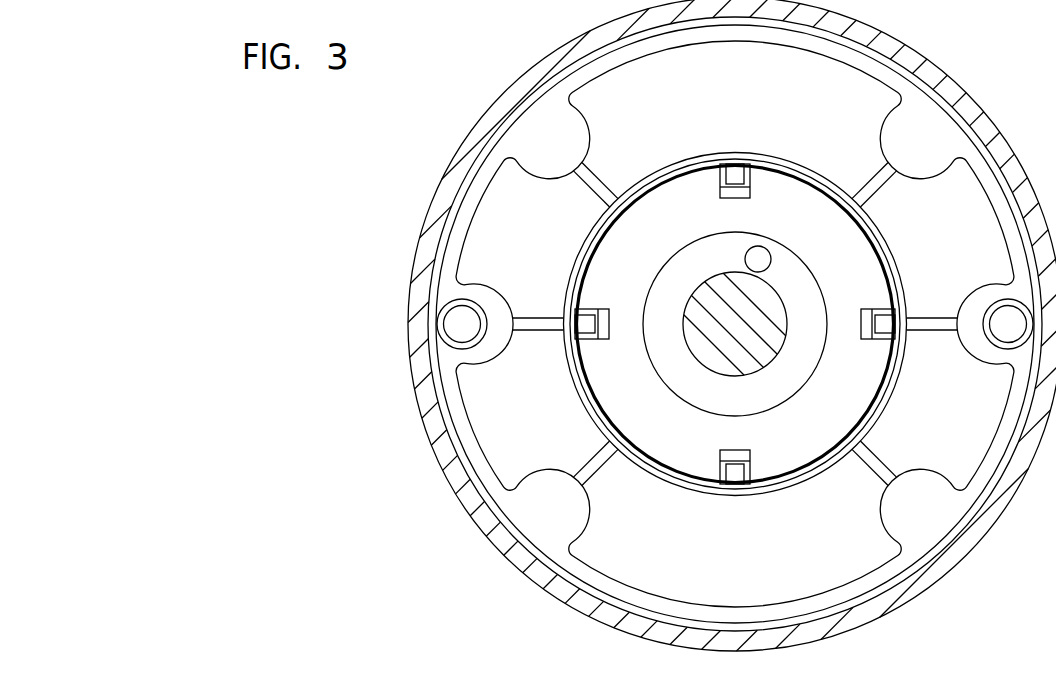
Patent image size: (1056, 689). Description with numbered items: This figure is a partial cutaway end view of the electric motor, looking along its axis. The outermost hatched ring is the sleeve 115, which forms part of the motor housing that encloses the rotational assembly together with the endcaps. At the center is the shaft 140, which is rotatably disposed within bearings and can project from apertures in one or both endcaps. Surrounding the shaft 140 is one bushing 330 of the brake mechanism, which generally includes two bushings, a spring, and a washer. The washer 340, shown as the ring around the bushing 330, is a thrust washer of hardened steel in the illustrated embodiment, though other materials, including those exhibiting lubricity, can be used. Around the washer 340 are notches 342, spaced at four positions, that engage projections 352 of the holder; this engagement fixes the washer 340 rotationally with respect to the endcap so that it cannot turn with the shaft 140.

The sleeve 115 is at (950, 91).
The shaft 140 is at (713, 356).
The bushing 330 is at (678, 377).
The washer 340 is at (867, 264).
The notches 342 is at (720, 188).
The projections 352 is at (733, 172).